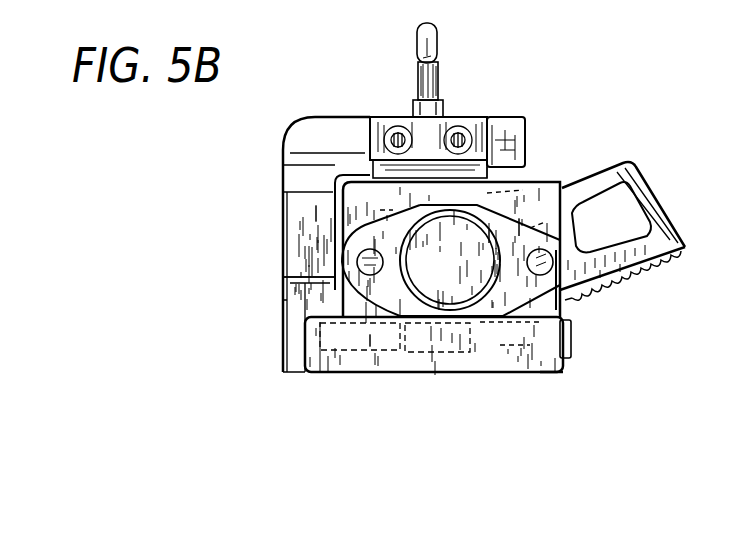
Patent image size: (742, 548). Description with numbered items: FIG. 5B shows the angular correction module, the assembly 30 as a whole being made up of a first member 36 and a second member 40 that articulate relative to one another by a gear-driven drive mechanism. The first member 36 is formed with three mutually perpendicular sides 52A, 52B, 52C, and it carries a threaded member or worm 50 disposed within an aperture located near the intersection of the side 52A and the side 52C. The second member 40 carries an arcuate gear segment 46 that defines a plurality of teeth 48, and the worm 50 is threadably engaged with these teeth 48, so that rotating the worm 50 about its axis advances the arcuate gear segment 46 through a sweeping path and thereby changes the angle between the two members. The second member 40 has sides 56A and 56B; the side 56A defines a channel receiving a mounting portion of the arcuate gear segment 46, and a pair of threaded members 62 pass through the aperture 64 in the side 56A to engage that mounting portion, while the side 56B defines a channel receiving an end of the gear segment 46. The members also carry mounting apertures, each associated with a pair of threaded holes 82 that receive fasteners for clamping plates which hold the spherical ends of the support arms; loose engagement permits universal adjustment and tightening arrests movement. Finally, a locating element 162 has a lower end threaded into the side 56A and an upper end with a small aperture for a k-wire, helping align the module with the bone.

The carburetor assembly 30 is at (542, 107).
The first member 36 is at (547, 362).
The second member 40 is at (286, 147).
The arcuate gear segment 46 is at (661, 214).
The teeth 48 is at (647, 272).
The threaded member 50 is at (362, 352).
The side 52A is at (532, 198).
The side 52B is at (568, 285).
The side 52C is at (440, 372).
The side 56A is at (332, 117).
The side 56B is at (283, 308).
The threaded members 62 is at (394, 134).
The aperture 64 is at (456, 127).
The threaded holes 82 is at (362, 255).
The locating element 162 is at (440, 42).